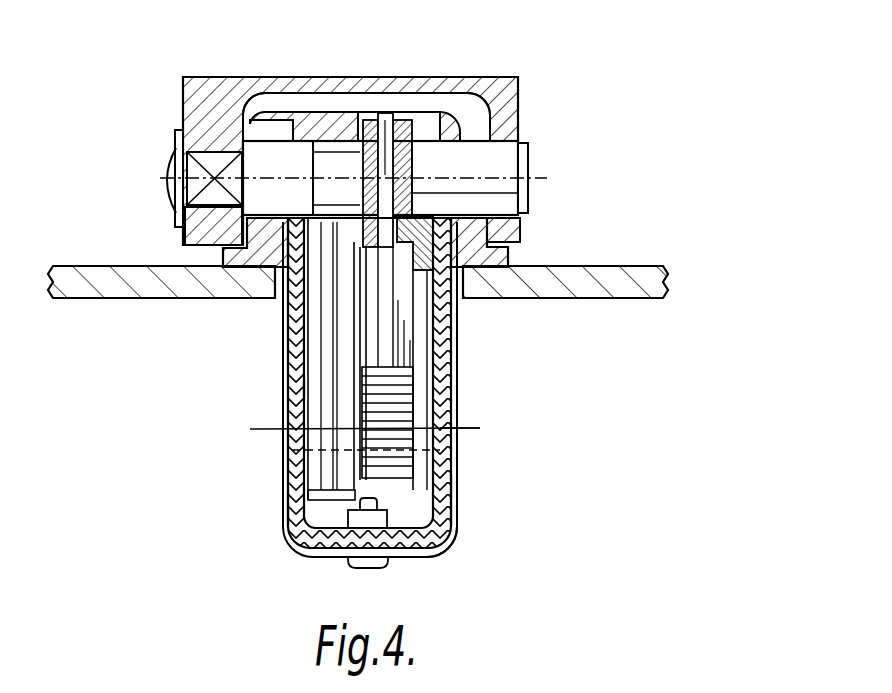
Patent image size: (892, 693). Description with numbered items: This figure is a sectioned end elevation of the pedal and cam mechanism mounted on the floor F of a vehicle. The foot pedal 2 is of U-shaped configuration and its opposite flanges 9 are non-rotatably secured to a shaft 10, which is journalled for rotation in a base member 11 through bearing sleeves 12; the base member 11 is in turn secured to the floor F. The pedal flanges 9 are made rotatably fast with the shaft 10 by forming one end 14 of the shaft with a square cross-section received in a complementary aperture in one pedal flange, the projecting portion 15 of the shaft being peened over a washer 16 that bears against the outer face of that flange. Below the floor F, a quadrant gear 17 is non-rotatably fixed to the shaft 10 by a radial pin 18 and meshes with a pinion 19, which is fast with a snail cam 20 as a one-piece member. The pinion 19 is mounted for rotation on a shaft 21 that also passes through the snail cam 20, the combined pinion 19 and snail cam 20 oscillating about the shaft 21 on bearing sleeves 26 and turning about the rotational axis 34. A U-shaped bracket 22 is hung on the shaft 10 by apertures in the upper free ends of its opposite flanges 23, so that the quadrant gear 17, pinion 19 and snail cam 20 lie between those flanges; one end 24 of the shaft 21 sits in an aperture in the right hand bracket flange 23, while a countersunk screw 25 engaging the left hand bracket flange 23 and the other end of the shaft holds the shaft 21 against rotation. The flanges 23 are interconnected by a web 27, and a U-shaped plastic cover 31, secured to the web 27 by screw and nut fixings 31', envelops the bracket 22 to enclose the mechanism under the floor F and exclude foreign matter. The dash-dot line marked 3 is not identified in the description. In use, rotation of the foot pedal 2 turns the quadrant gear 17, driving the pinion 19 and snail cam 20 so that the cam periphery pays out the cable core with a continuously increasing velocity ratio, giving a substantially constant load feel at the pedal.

The foot pedal 2 is at (477, 77).
The axis 3 is at (547, 178).
The pedal flanges 9 is at (187, 232).
The shaft 10 is at (510, 157).
The base member 11 is at (272, 107).
The bearing sleeves 12 is at (243, 135).
The shaft end 14 is at (176, 161).
The projecting portion of the shaft 15 is at (170, 198).
The washer 16 is at (174, 132).
The quadrant gear 17 is at (405, 332).
The radial pin 18 is at (392, 112).
The pinion 19 is at (413, 441).
The snail cam 20 is at (327, 311).
The shaft 21 is at (292, 450).
The U-shaped bracket 22 is at (310, 548).
The bracket flanges 23 is at (290, 496).
The shaft end 24 is at (458, 404).
The countersunk screw 25 is at (300, 428).
The bearing sleeves 26 is at (300, 388).
The web 27 is at (337, 537).
The U-shaped plastic cover 31 is at (452, 570).
The screw and nut fixings 31' is at (386, 583).
The rotational axis 34 is at (480, 428).
The floor F is at (63, 266).